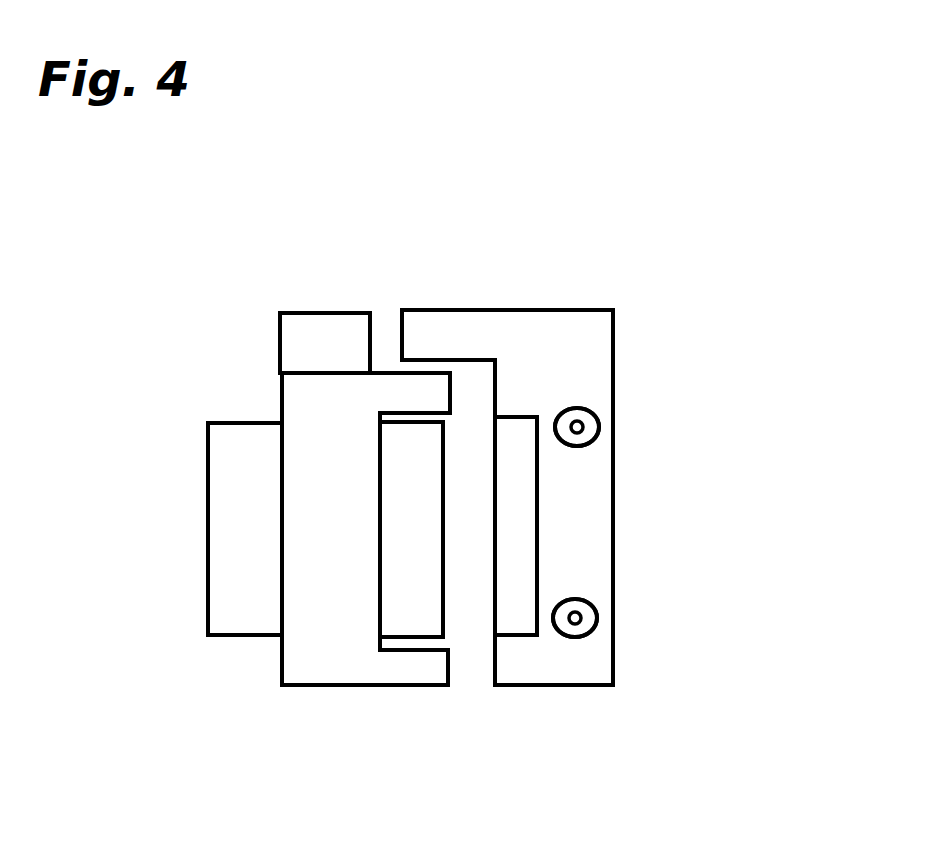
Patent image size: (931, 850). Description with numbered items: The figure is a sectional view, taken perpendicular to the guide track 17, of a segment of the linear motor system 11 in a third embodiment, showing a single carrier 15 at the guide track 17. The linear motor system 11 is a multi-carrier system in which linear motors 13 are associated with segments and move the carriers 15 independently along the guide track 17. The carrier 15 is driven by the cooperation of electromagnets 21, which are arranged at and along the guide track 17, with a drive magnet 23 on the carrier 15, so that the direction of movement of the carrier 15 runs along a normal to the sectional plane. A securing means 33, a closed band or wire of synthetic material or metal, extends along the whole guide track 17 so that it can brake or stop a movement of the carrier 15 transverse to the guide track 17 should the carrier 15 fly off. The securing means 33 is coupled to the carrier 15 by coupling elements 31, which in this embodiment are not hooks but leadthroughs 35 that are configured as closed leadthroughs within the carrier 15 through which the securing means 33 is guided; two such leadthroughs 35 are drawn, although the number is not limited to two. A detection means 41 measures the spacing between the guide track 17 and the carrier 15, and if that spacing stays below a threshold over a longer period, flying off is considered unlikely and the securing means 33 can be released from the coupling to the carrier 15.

The linear motor system 11 is at (735, 177).
The linear motor 13 is at (208, 636).
The carrier 15 is at (550, 497).
The guide track 17 is at (351, 599).
The electromagnet 21 is at (403, 615).
The drive magnet 23 is at (515, 618).
The coupling element 31 is at (598, 415).
The securing means 33 is at (590, 433).
The leadthrough 35 is at (576, 522).
The detection means 41 is at (312, 328).